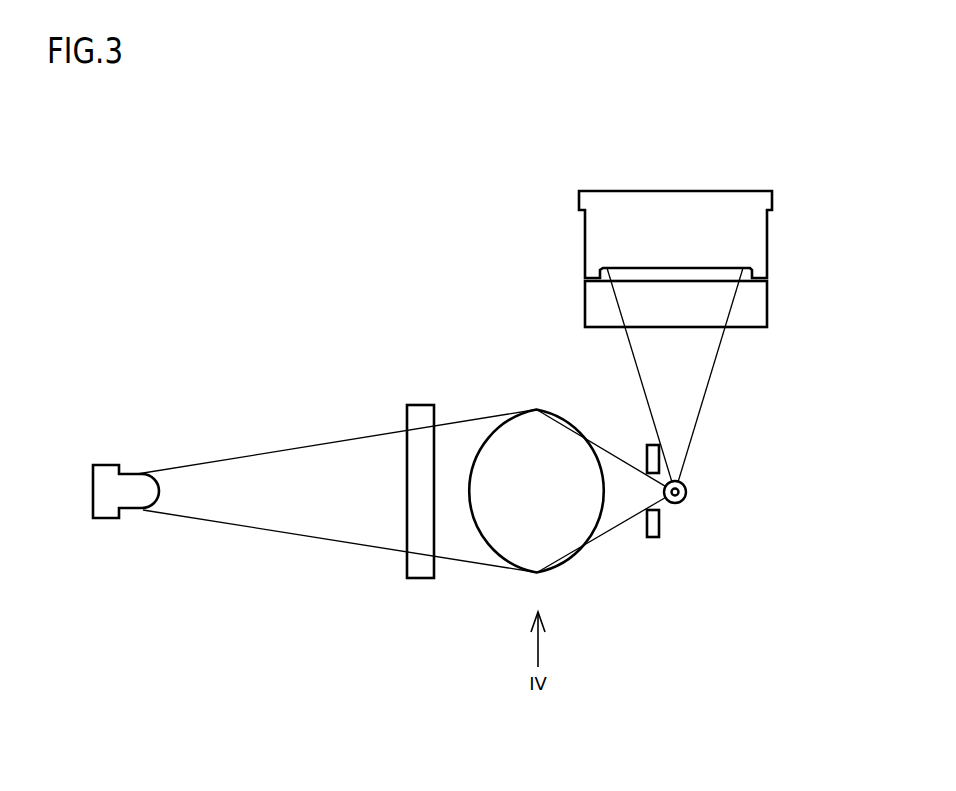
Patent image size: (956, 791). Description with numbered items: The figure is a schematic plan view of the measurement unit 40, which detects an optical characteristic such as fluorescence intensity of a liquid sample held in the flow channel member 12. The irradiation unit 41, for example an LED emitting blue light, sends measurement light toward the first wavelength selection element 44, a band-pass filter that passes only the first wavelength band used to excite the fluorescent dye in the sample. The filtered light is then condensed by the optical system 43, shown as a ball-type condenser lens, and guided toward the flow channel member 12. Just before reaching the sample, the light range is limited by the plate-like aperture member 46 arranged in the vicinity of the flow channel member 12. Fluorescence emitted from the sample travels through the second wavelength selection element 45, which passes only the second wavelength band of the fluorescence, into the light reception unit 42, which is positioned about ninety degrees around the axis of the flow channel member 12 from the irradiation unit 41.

The measurement unit 40 is at (784, 142).
The light reception unit 42 is at (706, 190).
The second wavelength selection element 45 is at (768, 300).
The irradiation unit 41 is at (108, 520).
The first wavelength selection element 44 is at (423, 403).
The optical system 43 is at (521, 391).
The flow channel member 12 is at (687, 494).
The aperture member 46 is at (654, 539).